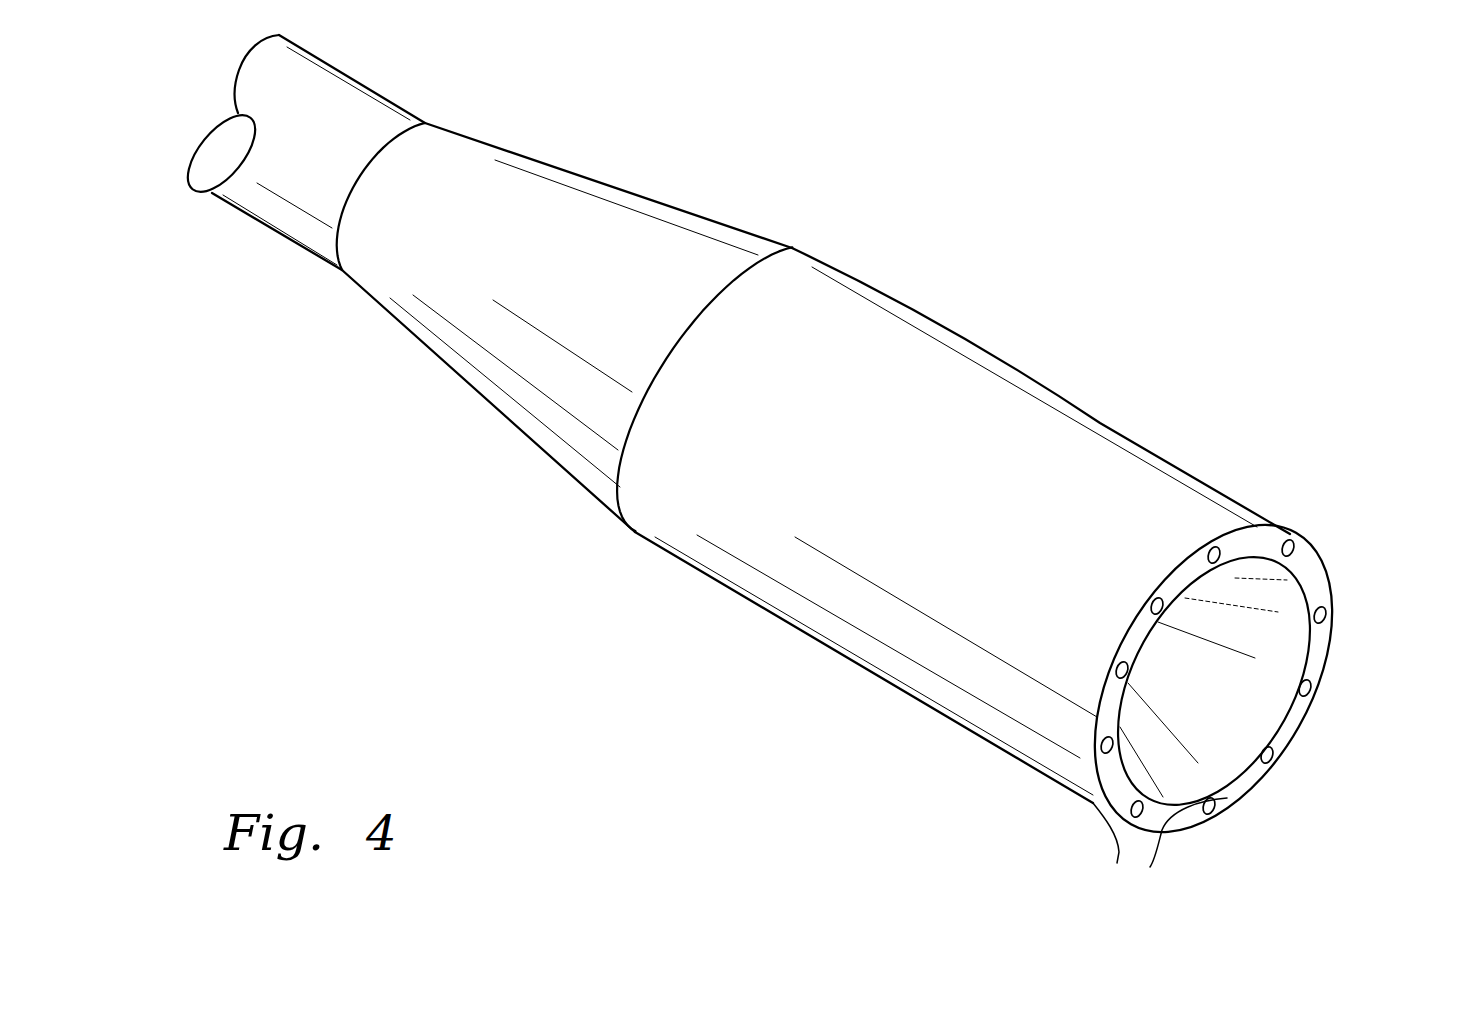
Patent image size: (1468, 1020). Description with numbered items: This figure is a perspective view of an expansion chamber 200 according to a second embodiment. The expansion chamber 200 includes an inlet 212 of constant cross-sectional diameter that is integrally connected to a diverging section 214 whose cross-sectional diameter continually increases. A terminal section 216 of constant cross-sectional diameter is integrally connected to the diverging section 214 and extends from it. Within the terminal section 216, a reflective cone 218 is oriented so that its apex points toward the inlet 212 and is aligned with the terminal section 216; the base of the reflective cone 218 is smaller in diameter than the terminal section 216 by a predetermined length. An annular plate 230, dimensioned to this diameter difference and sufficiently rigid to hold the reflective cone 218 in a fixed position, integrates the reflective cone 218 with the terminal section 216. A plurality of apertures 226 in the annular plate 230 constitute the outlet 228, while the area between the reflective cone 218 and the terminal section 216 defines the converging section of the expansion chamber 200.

The expansion chamber 200 is at (393, 532).
The inlet 212 is at (345, 67).
The diverging section 214 is at (555, 165).
The terminal section 216 is at (988, 352).
The reflective cone 218 is at (1252, 714).
The apertures 226 is at (1160, 847).
The outlet 228 is at (1268, 819).
The annular plate 230 is at (1322, 660).